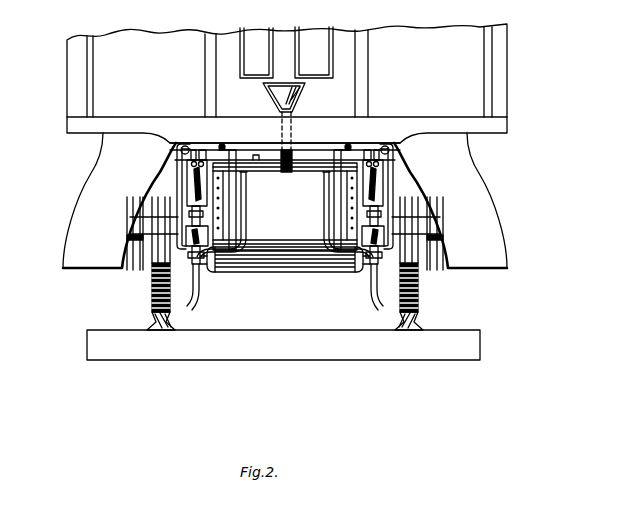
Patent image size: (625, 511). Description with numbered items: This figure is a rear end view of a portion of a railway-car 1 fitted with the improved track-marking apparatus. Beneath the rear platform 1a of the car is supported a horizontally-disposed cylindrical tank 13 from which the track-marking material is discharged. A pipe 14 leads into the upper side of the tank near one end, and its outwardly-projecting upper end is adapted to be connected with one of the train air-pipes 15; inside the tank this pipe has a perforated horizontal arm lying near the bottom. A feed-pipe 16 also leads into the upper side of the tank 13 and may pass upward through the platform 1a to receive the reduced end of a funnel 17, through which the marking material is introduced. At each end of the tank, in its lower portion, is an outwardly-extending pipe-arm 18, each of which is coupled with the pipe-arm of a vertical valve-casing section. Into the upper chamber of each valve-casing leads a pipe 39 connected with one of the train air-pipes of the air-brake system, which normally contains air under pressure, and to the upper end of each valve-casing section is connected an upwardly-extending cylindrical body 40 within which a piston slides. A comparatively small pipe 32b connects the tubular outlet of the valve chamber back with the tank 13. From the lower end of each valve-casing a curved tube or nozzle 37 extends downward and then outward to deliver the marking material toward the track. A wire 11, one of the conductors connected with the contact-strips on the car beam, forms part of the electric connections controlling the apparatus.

The railway-car 1 is at (467, 68).
The rear platform 1a is at (487, 123).
The wire 11 is at (183, 153).
The pipe-arm 18 is at (193, 152).
The pipe 14 is at (203, 150).
The train air-pipe 15 is at (220, 146).
The feed-pipe 16 is at (305, 142).
The funnel 17 is at (297, 97).
The pipe 39 is at (180, 167).
The cylindrical body 40 is at (193, 232).
The curved tube or nozzle 37 is at (198, 297).
The pipe 32b is at (323, 190).
The tank or cylinder 13 is at (313, 270).